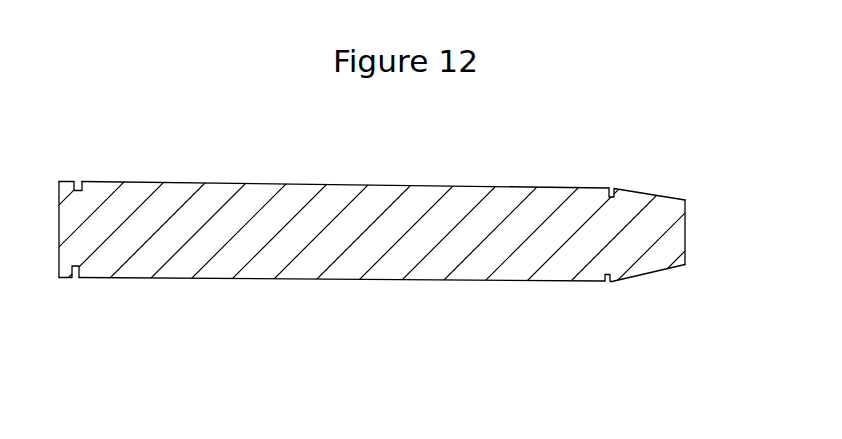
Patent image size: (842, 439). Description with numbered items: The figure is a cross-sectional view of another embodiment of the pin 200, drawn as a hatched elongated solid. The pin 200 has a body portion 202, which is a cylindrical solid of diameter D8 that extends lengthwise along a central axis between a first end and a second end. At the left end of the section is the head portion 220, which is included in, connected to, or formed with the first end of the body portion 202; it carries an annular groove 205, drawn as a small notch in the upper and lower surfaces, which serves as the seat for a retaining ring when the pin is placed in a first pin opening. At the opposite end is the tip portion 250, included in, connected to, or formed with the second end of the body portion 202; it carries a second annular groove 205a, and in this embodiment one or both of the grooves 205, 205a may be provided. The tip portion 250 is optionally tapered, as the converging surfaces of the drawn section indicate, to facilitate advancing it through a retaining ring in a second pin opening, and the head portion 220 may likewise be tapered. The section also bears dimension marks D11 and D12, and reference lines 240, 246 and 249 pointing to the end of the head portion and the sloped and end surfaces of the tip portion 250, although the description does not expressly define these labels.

The pin 200 is at (383, 159).
The body portion 202 is at (363, 197).
The annular groove 205 is at (78, 280).
The annular groove 205a is at (608, 283).
The head portion 220 is at (83, 198).
The proximal end face 240 is at (59, 273).
The lower tapered surface 246 is at (660, 273).
The distal end face 249 is at (685, 230).
The tip portion 250 is at (662, 210).
The diameter D8 is at (504, 302).
The dimension D11 (thickness at taper) D11 is at (610, 307).
The dimension D12 (proximal thickness) D12 is at (59, 330).